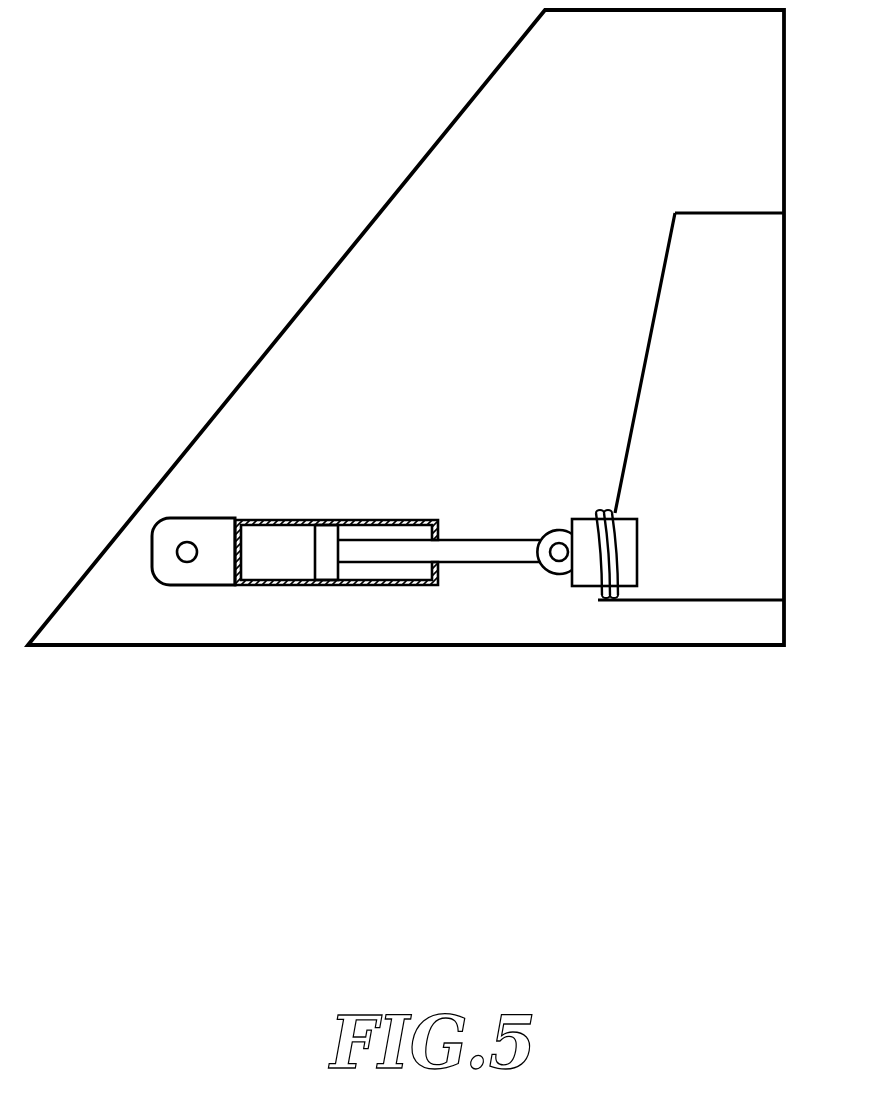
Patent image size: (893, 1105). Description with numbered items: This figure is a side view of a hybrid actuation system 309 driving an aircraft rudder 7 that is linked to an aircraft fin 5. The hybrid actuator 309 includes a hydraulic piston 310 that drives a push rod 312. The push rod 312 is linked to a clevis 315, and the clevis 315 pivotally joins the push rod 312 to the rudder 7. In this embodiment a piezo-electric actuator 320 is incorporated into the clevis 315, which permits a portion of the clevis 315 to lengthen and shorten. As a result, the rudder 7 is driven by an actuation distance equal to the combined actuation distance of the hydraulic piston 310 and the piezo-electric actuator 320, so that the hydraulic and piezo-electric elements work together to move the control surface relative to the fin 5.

The aircraft fin 5 is at (370, 282).
The aircraft rudder 7 is at (752, 370).
The hybrid actuation system 309 is at (648, 752).
The hydraulic piston 310 is at (304, 520).
The push rod 312 is at (490, 530).
The clevis 315 is at (550, 596).
The piezo-electric actuator 320 is at (580, 510).